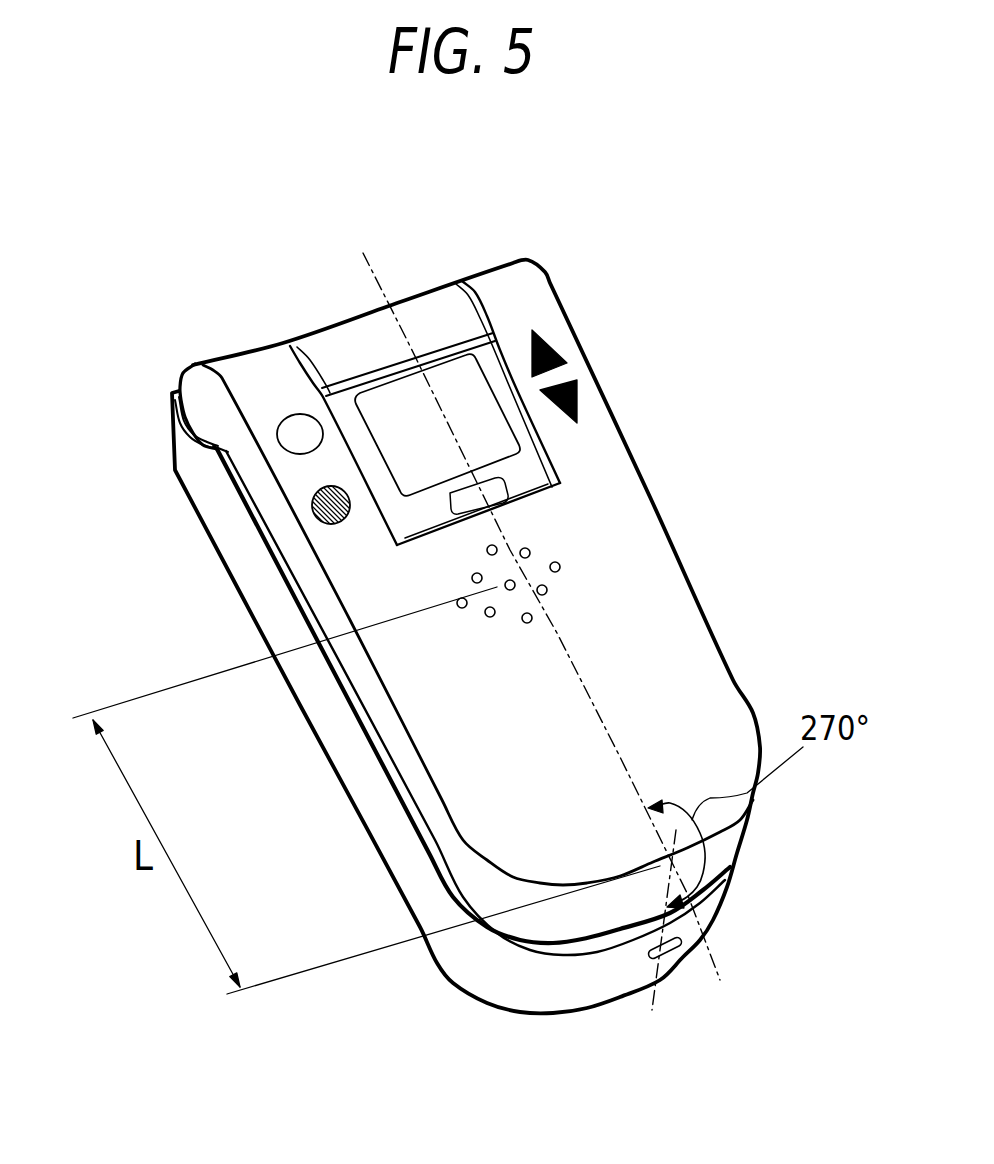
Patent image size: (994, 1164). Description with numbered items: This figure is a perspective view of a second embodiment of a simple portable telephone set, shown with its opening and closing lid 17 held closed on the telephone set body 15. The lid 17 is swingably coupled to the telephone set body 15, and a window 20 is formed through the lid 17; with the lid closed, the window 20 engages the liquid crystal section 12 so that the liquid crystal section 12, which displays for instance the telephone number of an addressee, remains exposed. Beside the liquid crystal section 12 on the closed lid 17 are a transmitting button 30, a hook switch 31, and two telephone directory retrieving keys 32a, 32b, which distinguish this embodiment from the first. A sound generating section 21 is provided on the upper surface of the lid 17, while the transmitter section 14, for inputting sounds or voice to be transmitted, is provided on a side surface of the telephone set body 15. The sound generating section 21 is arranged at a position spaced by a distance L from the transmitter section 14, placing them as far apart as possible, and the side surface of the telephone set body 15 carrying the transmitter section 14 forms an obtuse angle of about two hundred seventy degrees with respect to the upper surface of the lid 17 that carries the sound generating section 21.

The liquid crystal section 12 is at (550, 447).
The transmitter section 14 is at (680, 957).
The telephone set body 15 is at (373, 818).
The opening and closing lid 17 is at (666, 593).
The window 20 is at (498, 338).
The sound generating section 21 is at (556, 562).
The transmitting button 30 is at (290, 441).
The hook switch 31 is at (312, 506).
The telephone directory retrieving key 32a is at (553, 348).
The telephone directory retrieving key 32b is at (577, 397).